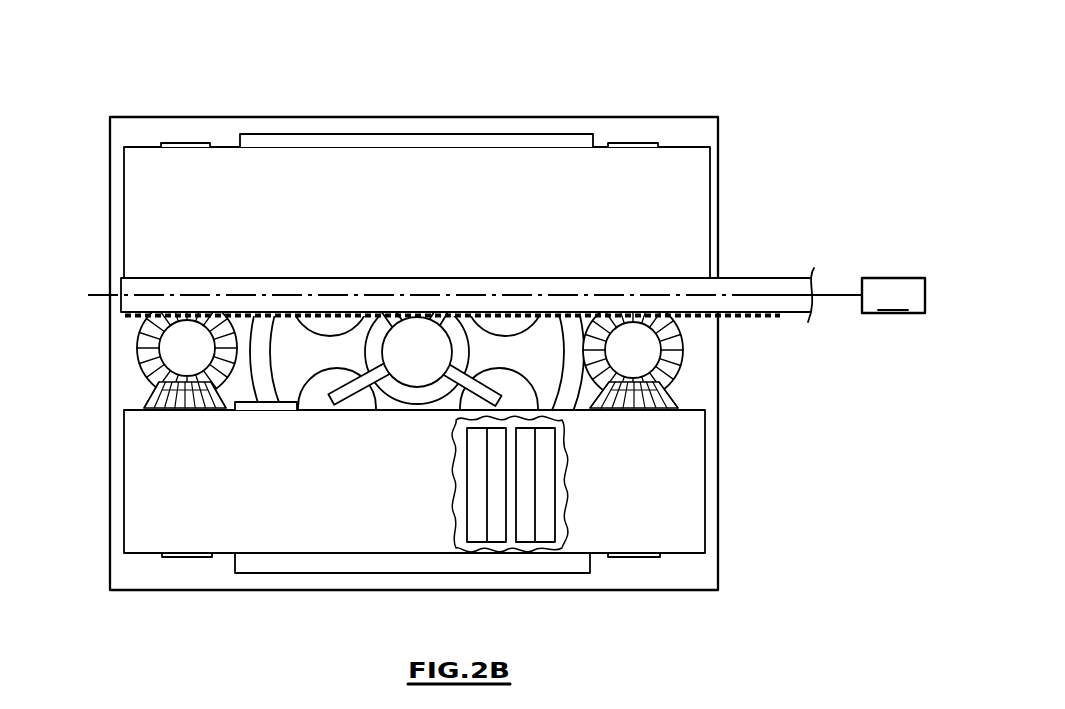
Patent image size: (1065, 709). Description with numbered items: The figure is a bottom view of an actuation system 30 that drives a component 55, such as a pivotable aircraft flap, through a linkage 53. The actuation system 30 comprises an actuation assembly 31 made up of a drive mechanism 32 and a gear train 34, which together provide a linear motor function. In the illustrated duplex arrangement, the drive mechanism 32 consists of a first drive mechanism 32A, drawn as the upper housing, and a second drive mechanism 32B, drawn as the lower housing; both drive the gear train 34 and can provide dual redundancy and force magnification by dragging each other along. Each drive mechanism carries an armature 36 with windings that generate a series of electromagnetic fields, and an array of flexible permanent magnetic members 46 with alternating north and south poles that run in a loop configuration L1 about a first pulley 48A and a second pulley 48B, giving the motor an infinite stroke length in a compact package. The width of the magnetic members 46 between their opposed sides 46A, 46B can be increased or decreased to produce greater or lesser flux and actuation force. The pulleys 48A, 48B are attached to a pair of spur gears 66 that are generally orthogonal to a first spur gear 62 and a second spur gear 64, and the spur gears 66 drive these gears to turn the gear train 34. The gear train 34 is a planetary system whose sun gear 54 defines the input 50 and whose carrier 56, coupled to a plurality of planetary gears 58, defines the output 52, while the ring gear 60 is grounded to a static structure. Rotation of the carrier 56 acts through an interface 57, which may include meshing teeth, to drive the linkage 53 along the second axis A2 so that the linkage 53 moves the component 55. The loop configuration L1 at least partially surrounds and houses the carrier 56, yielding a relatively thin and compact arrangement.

The actuation system 30 is at (383, 305).
The actuation assembly 31 is at (189, 98).
The drive mechanism 32 is at (484, 212).
The first drive mechanism 32A is at (484, 212).
The second drive mechanism 32B is at (708, 498).
The gear train 34 is at (432, 352).
The armature 36 is at (572, 128).
The magnetic members 46 is at (476, 520).
The first opposed side of magnetic members 46A is at (458, 425).
The second opposed side of magnetic members 46B is at (478, 543).
The first pulley 48A is at (198, 143).
The second pulley 48B is at (642, 143).
The input 50 is at (432, 352).
The output 52 is at (376, 362).
The linkage 53 is at (787, 285).
The sun gear 54 is at (432, 352).
The component 55 is at (893, 295).
The carrier 56 is at (348, 398).
The interface 57 is at (463, 302).
The planetary gears 58 is at (282, 318).
The ring gear 60 is at (234, 396).
The first spur gear 62 is at (137, 340).
The second spur gear 64 is at (687, 362).
The pair of spur gears 66 is at (411, 414).
The second axis A2 is at (459, 271).
The loop configuration L1 is at (716, 240).